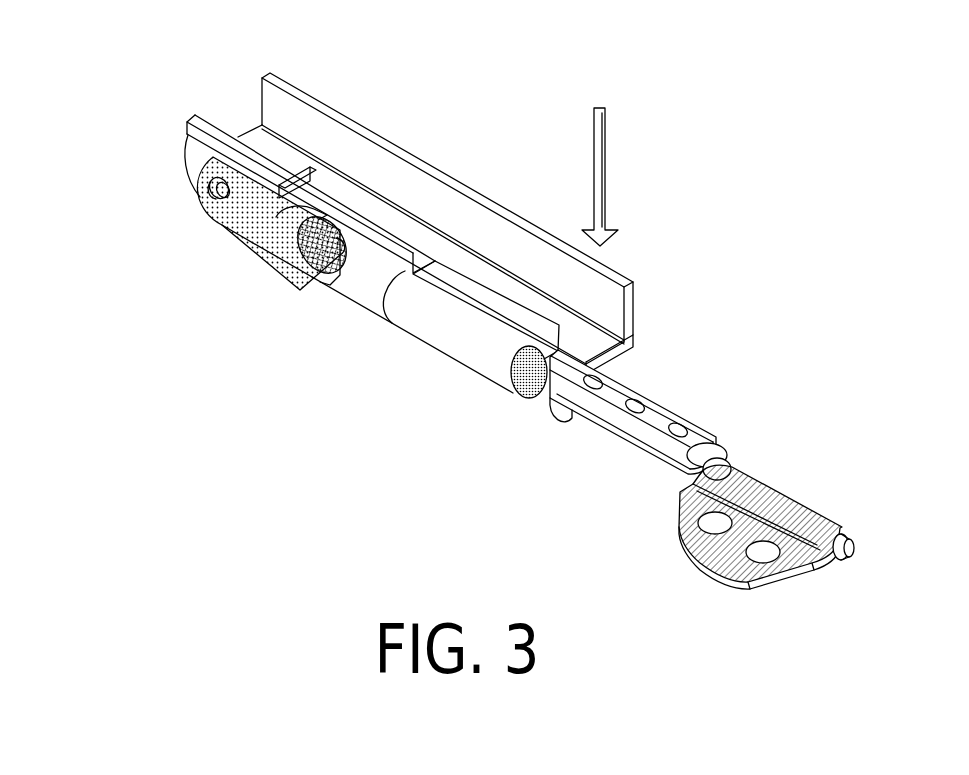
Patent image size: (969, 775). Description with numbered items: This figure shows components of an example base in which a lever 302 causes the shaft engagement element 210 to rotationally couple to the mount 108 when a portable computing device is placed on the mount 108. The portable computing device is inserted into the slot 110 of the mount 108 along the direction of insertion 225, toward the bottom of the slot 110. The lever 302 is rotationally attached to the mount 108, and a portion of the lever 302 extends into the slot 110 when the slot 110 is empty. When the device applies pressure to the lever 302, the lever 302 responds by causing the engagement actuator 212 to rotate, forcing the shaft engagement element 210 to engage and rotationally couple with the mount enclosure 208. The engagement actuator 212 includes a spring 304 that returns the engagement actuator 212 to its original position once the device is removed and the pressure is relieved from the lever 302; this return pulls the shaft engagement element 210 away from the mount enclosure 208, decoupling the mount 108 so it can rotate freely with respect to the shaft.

The mount 108 is at (628, 298).
The slot 110 is at (240, 113).
The lever 302 is at (283, 160).
The direction of insertion 225 is at (598, 148).
The spring 304 is at (210, 192).
The engagement actuator 212 is at (228, 237).
The shaft engagement element 210 is at (322, 285).
The mount enclosure 208 is at (378, 316).